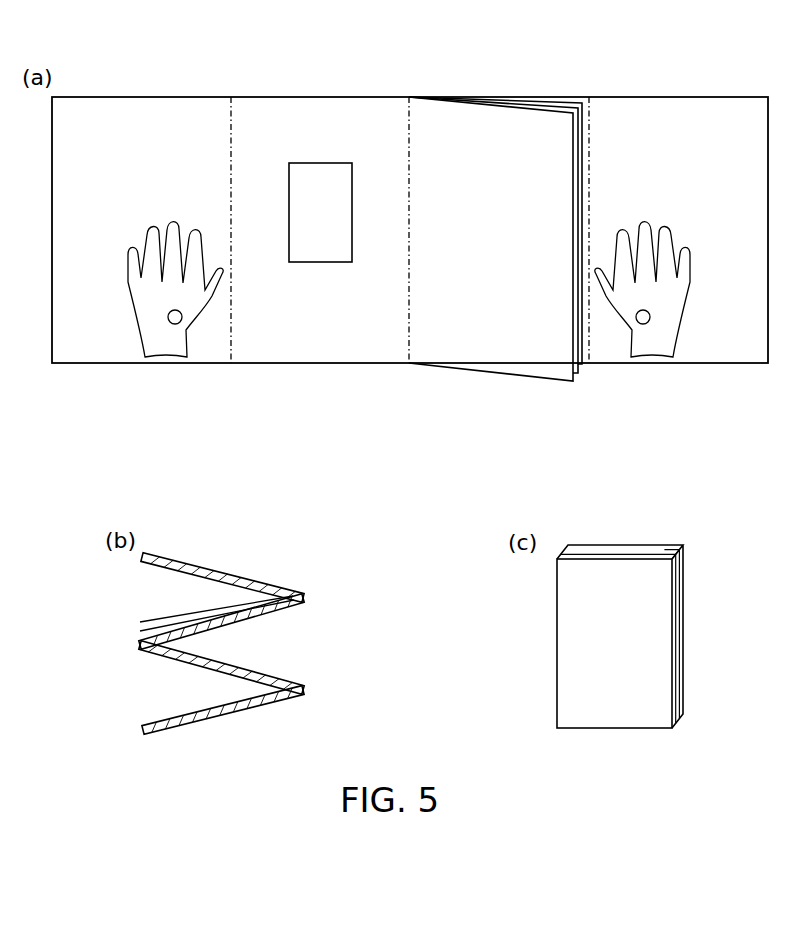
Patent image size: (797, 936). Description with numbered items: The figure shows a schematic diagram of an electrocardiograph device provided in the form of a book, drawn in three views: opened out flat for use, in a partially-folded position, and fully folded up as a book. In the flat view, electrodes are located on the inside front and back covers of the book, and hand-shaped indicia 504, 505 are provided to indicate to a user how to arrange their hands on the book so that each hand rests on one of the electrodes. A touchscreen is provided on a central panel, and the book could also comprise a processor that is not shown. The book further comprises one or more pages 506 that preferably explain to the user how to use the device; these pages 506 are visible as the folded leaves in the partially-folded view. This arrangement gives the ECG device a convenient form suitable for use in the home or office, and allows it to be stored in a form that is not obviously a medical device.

The indicia 504 is at (143, 333).
The indicia 505 is at (683, 335).
The pages 506 is at (153, 622).